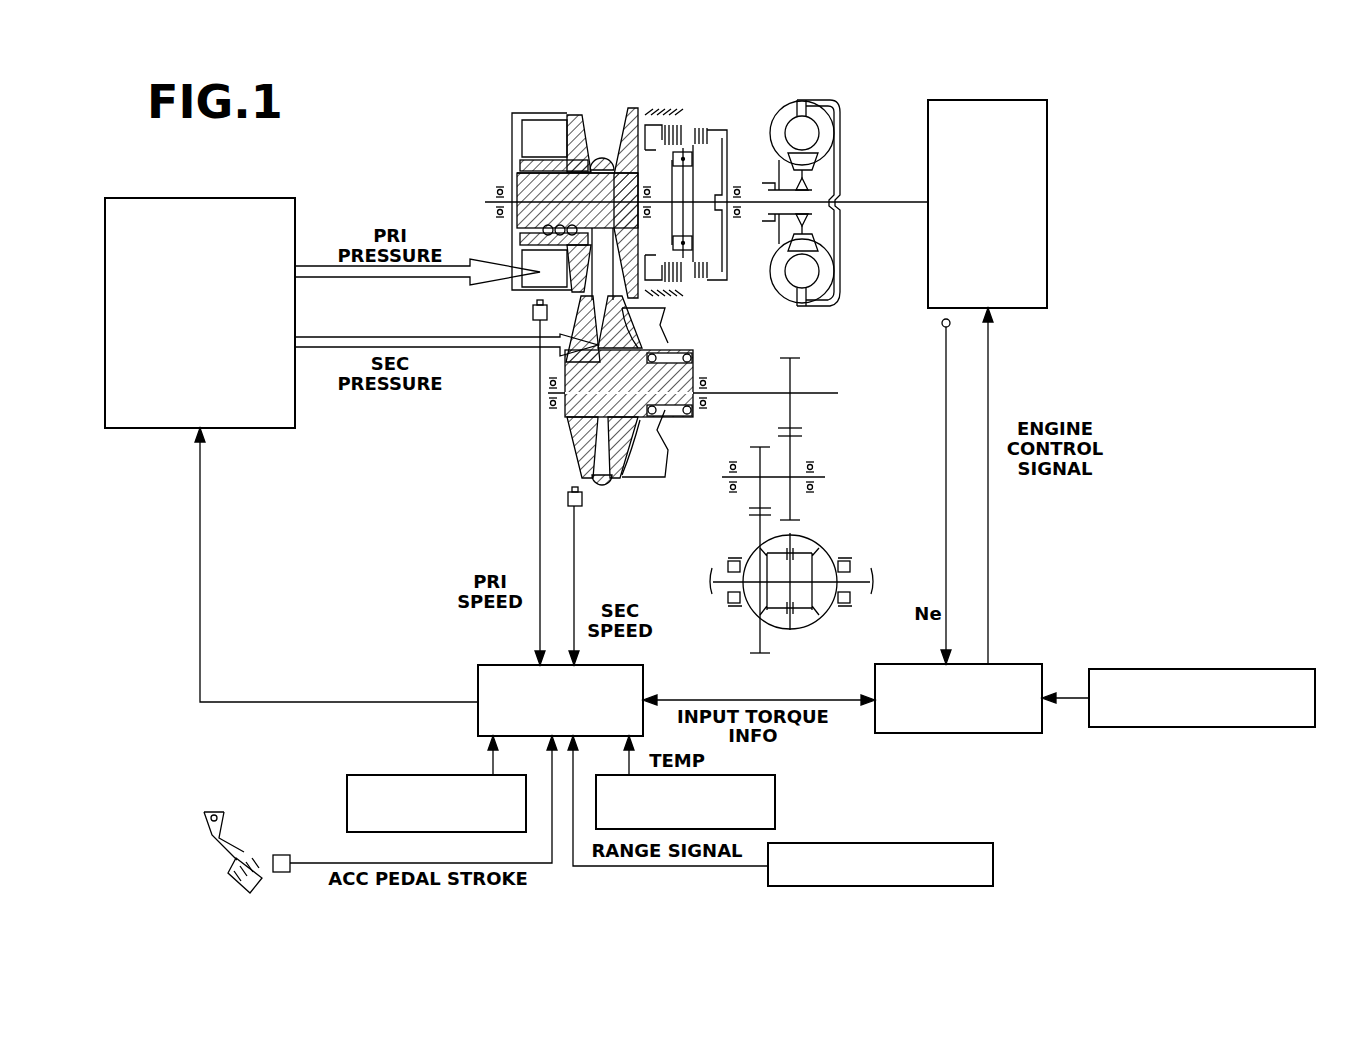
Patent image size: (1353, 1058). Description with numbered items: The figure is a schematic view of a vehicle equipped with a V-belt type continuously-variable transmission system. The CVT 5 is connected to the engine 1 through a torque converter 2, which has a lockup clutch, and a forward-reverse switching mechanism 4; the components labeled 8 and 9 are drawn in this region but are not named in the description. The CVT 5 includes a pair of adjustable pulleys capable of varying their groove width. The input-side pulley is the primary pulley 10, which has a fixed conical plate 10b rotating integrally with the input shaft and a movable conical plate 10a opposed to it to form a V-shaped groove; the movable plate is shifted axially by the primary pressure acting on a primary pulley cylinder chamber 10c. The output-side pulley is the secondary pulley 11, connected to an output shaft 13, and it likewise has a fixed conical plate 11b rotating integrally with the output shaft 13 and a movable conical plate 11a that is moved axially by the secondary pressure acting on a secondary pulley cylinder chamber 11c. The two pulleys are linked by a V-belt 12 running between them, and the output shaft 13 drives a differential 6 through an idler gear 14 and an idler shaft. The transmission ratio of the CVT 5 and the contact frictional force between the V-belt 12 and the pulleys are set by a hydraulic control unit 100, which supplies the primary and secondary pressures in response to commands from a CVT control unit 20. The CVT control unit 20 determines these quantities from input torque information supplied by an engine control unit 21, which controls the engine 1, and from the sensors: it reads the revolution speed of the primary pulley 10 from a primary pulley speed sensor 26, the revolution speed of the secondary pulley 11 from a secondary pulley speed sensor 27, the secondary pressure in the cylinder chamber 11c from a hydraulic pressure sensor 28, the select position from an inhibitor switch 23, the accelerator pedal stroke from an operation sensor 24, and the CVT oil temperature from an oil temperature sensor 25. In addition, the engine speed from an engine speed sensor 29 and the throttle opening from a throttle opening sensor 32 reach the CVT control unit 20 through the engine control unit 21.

The hydraulic control unit 100 is at (232, 198).
The engine 1 is at (1005, 100).
The torque converter 2 is at (808, 90).
The forward-reverse switching mechanism 4 is at (705, 167).
The CVT 5 is at (561, 167).
The differential 6 is at (845, 525).
The reverse brake 8 is at (722, 120).
The forward clutch 9 is at (683, 118).
The primary pulley 10 is at (629, 95).
The movable conical plate 10a is at (583, 112).
The fixed conical plate 10b is at (645, 110).
The primary pulley cylinder chamber 10c is at (530, 143).
The secondary pulley 11 is at (653, 431).
The movable conical plate 11a is at (612, 495).
The fixed conical plate 11b is at (580, 455).
The secondary pulley cylinder chamber 11c is at (640, 476).
The V-belt 12 is at (603, 152).
The output shaft 13 is at (743, 392).
The idler gear 14 is at (792, 410).
The CVT control unit 20 is at (478, 682).
The engine control unit 21 is at (1013, 664).
The inhibitor switch 23 is at (993, 866).
The operation sensor 24 is at (282, 855).
The oil temperature sensor 25 is at (775, 800).
The primary pulley speed sensor 26 is at (533, 313).
The secondary pulley speed sensor 27 is at (582, 508).
The hydraulic pressure sensor 28 is at (355, 775).
The engine speed sensor 29 is at (942, 326).
The throttle opening sensor 32 is at (1283, 669).